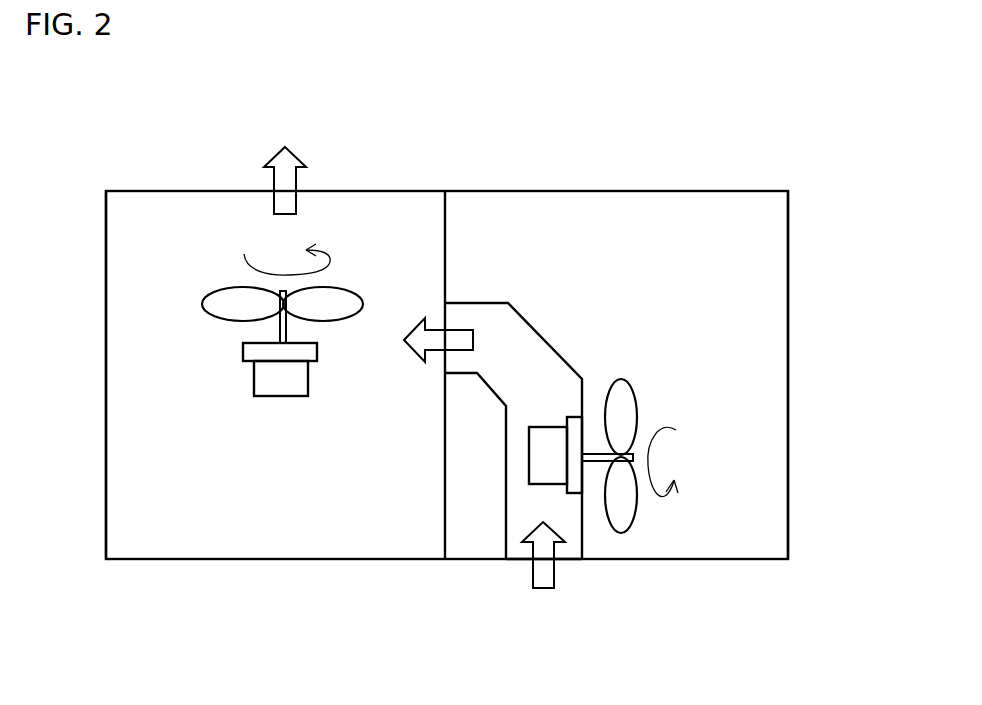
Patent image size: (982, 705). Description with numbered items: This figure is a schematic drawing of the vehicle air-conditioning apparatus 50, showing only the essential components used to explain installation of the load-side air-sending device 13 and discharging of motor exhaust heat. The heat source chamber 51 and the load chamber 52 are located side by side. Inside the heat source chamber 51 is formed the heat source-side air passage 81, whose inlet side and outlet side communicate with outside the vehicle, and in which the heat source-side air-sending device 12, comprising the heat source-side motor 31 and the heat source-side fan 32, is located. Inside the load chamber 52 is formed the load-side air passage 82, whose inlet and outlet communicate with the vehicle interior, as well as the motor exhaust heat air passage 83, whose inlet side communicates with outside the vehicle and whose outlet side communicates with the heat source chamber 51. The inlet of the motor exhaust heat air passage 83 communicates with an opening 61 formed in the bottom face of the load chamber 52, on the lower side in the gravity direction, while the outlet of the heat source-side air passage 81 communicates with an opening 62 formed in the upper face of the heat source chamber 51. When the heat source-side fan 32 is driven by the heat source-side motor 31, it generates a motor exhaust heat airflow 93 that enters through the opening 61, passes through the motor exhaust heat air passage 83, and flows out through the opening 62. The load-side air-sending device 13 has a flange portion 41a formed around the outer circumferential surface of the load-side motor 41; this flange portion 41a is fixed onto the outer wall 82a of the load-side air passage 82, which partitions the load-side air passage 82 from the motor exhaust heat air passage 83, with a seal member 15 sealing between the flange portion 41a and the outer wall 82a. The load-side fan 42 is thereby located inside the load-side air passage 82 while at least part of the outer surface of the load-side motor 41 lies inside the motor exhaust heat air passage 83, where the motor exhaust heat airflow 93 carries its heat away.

The housing 50 is at (177, 160).
The heat source chamber 51 is at (133, 190).
The load chamber 52 is at (765, 191).
The heat source-side air passage 81 is at (150, 262).
The load-side air passage 82 is at (752, 263).
The outer wall 82a is at (582, 407).
The seal member 15 is at (582, 410).
The opening 62 is at (333, 191).
The motor exhaust heat air passage 83 is at (518, 519).
The opening 61 is at (517, 560).
The motor exhaust heat airflow 93 is at (545, 573).
The heat source-side air-sending device 12 is at (266, 459).
The heat source-side motor 31 is at (283, 380).
The heat source-side fan 32 is at (240, 302).
The load-side air-sending device 13 is at (692, 522).
The load-side motor 41 is at (557, 462).
The flange portion 41a is at (573, 433).
The load-side fan 42 is at (623, 490).